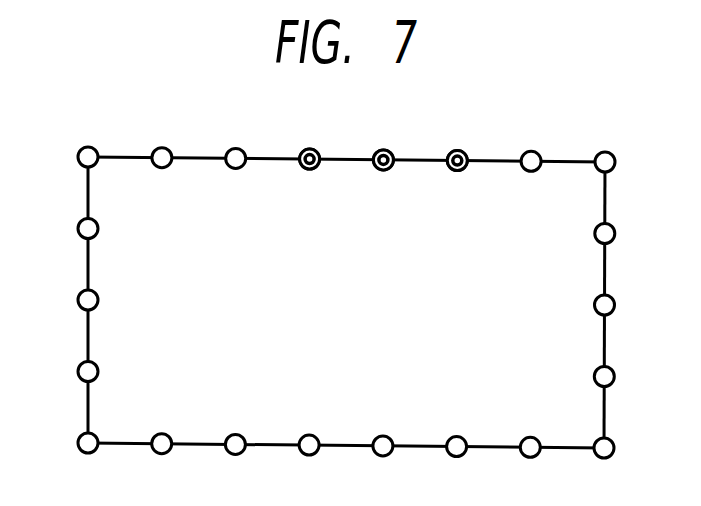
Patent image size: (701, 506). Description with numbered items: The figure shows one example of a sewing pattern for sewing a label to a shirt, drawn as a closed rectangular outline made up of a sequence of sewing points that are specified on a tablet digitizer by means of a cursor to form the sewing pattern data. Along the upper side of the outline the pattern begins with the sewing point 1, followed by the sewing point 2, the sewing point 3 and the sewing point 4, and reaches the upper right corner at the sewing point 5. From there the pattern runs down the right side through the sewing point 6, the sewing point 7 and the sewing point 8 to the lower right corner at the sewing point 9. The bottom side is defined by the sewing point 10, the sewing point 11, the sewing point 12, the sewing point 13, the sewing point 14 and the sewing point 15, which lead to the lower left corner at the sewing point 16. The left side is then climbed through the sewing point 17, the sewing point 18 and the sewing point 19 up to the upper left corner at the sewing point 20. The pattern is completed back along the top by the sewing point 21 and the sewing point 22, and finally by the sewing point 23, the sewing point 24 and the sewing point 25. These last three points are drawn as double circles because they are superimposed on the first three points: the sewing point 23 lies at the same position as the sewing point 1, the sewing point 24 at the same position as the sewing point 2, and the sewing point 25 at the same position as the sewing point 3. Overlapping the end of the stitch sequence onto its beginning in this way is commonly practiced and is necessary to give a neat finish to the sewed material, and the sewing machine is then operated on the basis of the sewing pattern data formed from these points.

The sewing point 1 is at (311, 141).
The sewing point 2 is at (384, 142).
The sewing point 3 is at (457, 142).
The sewing point 4 is at (532, 142).
The sewing point 5 is at (623, 166).
The sewing point 6 is at (623, 237).
The sewing point 7 is at (624, 309).
The sewing point 8 is at (623, 380).
The sewing point 9 is at (623, 452).
The sewing point 10 is at (532, 466).
The sewing point 11 is at (458, 466).
The sewing point 12 is at (385, 466).
The sewing point 13 is at (312, 465).
The sewing point 14 is at (237, 465).
The sewing point 15 is at (162, 465).
The sewing point 16 is at (66, 447).
The sewing point 17 is at (66, 377).
The sewing point 18 is at (66, 305).
The sewing point 19 is at (66, 234).
The sewing point 20 is at (66, 161).
The sewing point 21 is at (162, 177).
The sewing point 22 is at (237, 177).
The sewing point 23 is at (312, 178).
The sewing point 24 is at (385, 178).
The sewing point 25 is at (458, 179).